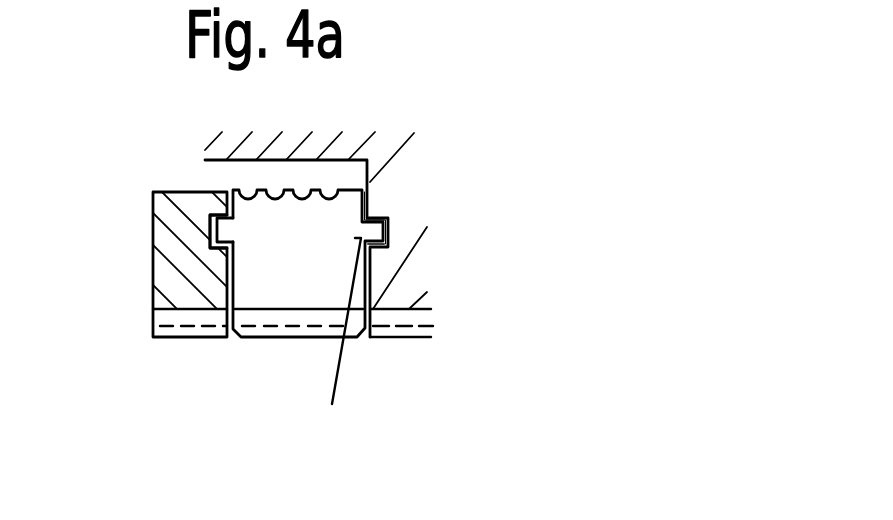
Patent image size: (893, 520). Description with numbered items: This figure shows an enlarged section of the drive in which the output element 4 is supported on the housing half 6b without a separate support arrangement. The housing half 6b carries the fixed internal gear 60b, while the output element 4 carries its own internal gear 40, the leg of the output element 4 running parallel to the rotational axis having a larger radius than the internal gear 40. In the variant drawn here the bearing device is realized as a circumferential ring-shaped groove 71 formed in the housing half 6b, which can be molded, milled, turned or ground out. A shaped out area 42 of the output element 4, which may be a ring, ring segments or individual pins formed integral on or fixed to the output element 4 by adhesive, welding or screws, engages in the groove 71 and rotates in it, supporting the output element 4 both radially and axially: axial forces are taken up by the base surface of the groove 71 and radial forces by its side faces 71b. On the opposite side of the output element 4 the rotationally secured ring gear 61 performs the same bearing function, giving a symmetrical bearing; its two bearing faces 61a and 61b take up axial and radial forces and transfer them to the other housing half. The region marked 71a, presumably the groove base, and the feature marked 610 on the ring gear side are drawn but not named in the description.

The output element 4 is at (337, 218).
The housing half 6b is at (410, 255).
The fixed internal gear 60b is at (406, 334).
The internal gear 40 is at (297, 321).
The shaped out area 42 is at (335, 344).
The ring gear 61 is at (177, 277).
The bearing face 61a is at (212, 217).
The bearing face 61b is at (210, 249).
The base plate portion 610 is at (173, 330).
The groove 71 is at (392, 219).
The clip leg 71a is at (386, 236).
The side faces 71b is at (373, 209).